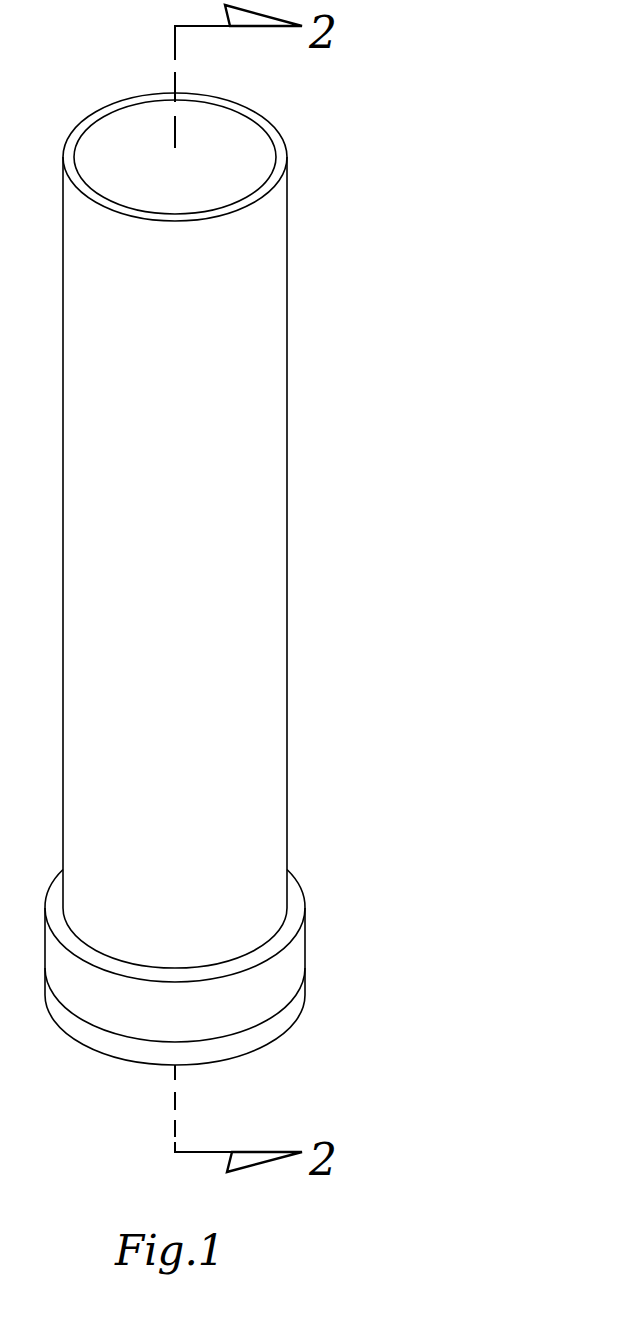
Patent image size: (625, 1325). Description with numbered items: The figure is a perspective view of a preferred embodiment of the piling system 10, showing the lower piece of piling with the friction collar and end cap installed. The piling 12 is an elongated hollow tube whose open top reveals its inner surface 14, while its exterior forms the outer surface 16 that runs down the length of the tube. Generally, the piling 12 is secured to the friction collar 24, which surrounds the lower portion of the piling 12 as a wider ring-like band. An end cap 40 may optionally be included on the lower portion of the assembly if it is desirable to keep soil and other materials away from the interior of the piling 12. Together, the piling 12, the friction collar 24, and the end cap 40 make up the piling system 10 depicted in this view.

The piling system 10 is at (217, 579).
The piling 12 is at (301, 269).
The inner surface 14 is at (190, 193).
The outer surface 16 is at (212, 530).
The friction collar 24 is at (201, 967).
The end cap 40 is at (293, 1007).